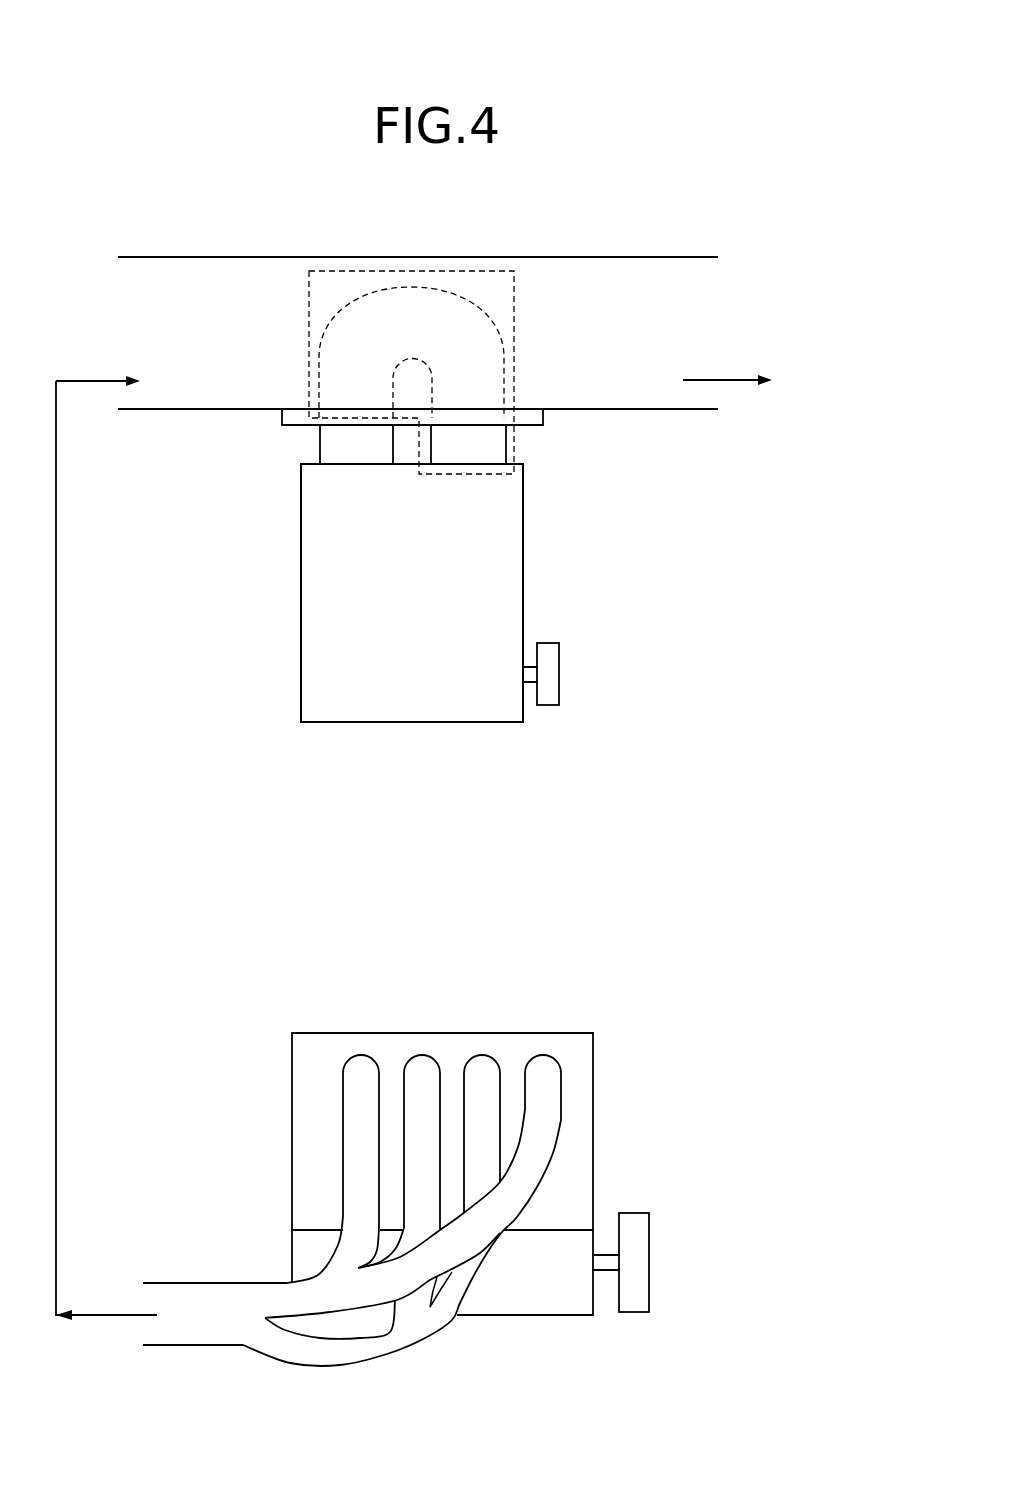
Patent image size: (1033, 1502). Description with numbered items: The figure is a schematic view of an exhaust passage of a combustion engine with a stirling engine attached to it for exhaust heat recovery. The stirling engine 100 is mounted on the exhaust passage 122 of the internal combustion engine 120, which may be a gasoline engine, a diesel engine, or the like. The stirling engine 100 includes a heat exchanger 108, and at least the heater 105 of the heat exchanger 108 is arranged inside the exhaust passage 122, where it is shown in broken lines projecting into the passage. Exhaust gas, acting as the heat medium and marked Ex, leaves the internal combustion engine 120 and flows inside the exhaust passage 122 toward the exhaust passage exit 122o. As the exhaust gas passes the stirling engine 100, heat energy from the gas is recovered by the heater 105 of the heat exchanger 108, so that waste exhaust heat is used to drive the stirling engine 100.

The stirling engine 100 is at (262, 529).
The heater 105 is at (447, 316).
The heat exchanger 108 is at (515, 367).
The internal combustion engine 120 is at (585, 1043).
The exhaust passage 122 is at (667, 268).
The exhaust passage exit 122o is at (818, 288).